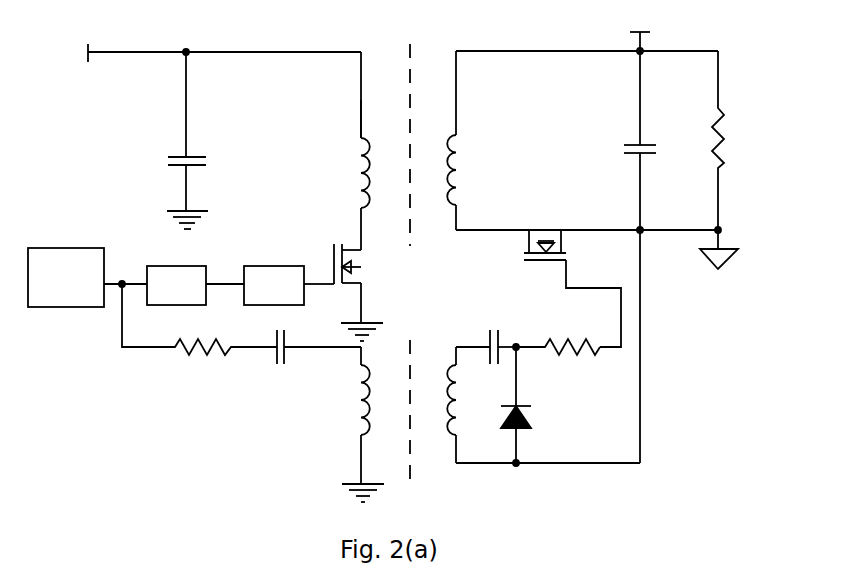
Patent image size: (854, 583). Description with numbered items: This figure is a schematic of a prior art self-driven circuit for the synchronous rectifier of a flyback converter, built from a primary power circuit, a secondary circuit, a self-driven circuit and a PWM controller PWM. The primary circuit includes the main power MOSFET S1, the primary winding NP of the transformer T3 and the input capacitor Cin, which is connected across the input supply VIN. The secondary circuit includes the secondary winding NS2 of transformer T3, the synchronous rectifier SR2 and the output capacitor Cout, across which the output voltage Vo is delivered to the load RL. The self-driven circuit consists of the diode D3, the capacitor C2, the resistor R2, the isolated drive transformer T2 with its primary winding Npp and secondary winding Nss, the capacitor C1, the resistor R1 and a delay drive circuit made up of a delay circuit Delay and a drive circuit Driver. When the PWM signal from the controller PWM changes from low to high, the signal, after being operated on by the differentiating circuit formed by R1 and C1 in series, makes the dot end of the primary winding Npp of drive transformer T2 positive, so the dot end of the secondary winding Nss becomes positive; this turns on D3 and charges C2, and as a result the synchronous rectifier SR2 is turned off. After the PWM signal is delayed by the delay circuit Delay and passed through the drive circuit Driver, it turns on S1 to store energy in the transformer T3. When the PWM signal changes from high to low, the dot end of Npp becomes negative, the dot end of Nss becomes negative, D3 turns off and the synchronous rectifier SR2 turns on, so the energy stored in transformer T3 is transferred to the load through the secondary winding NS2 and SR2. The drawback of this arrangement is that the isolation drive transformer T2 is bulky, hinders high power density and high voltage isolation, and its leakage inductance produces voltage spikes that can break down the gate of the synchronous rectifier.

The input voltage VIN is at (209, 53).
The input capacitor Cin is at (202, 140).
The primary winding NP is at (346, 151).
The main power MOSFET S1 is at (359, 292).
The PWM controller PWM is at (87, 277).
The delay circuit Delay is at (195, 285).
The drive circuit Driver is at (289, 285).
The resistor R1 is at (199, 319).
The capacitor C1 is at (305, 340).
The primary winding of isolated drive transformer Npp is at (349, 424).
The transformer T3 is at (421, 145).
The isolated drive transformer T2 is at (421, 415).
The output voltage Vo is at (587, 37).
The secondary winding NS2 is at (582, 140).
The output capacitor Cout is at (609, 257).
The load resistor RL is at (709, 160).
The synchronous rectifier MOSFET SR2 is at (572, 277).
The resistor R2 is at (556, 337).
The capacitor C2 is at (485, 346).
The secondary winding of isolated drive transformer Nss is at (543, 405).
The diode D3 is at (529, 406).